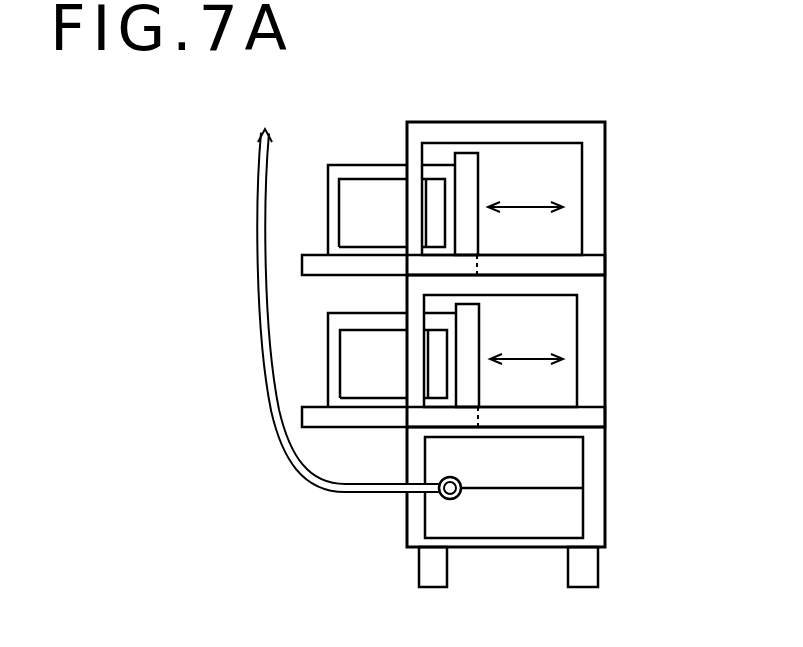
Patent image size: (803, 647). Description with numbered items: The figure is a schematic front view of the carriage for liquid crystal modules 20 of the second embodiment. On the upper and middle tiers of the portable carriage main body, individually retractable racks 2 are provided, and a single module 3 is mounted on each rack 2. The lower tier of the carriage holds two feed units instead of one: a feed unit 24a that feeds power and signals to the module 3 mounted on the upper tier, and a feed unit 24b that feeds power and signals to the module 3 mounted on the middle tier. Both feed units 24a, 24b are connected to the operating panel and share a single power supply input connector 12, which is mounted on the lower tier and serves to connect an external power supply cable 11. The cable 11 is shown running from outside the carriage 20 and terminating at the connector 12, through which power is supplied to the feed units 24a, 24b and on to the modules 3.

The individually retractable rack 2 is at (318, 266).
The module 3 is at (439, 192).
The external power supply cable 11 is at (259, 215).
The power supply input connector 12 is at (450, 499).
The carriage for liquid crystal modules 20 is at (627, 135).
The feed unit 24a is at (557, 463).
The feed unit 24b is at (557, 520).